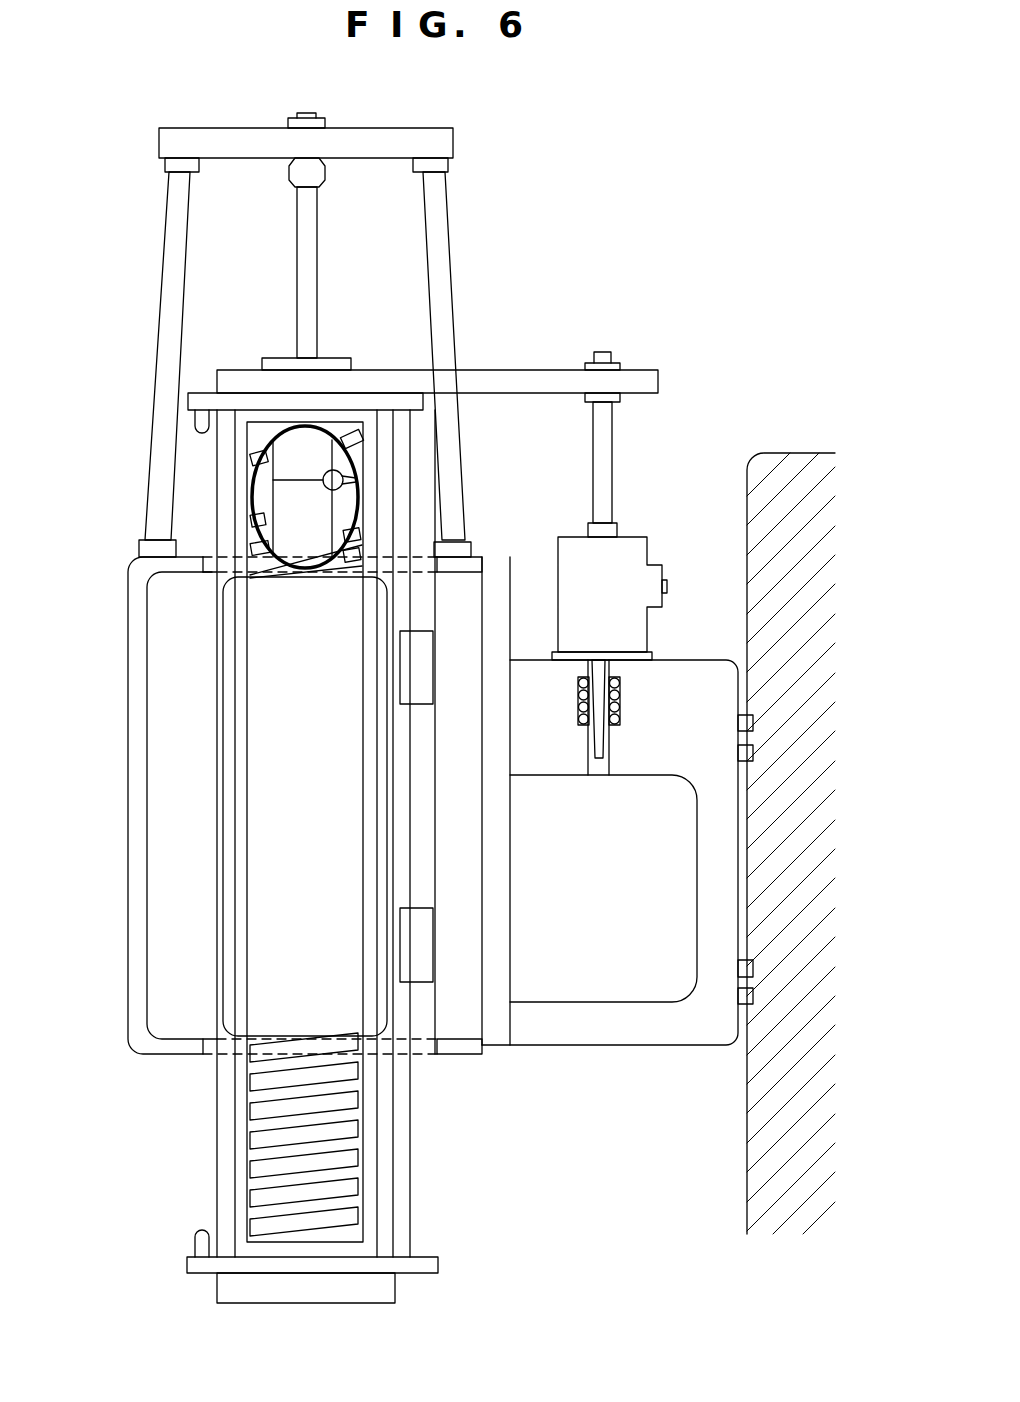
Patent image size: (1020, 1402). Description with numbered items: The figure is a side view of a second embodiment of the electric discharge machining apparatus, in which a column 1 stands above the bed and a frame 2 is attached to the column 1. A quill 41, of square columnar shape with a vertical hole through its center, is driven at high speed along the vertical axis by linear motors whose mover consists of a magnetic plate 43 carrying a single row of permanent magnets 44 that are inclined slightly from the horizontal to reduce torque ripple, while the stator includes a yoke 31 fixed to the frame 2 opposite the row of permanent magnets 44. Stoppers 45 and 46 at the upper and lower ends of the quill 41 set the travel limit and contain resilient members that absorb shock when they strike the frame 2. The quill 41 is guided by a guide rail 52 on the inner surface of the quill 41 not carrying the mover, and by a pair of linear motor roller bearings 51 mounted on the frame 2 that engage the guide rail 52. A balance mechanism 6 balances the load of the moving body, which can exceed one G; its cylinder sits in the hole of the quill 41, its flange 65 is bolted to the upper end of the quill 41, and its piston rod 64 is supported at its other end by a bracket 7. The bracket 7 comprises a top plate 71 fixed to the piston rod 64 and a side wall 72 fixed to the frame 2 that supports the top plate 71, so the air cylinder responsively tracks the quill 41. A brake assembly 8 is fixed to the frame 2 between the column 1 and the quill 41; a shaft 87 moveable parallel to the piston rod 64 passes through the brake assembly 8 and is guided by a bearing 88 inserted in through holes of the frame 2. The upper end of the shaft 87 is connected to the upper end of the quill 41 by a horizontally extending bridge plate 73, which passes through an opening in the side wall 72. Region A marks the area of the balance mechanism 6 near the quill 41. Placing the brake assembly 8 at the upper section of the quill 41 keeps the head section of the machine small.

The column 1 is at (783, 453).
The frame 2 is at (128, 653).
The balance mechanism 6 is at (333, 457).
The bracket 7 is at (485, 220).
The brake assembly 8 is at (643, 538).
The yoke 31 is at (232, 857).
The quill 41 is at (212, 1085).
The magnetic plate 43 is at (355, 1228).
The permanent magnets 44 is at (353, 1202).
The stopper 45 is at (195, 426).
The stopper 46 is at (193, 1243).
The linear motor roller bearings 51 is at (425, 685).
The guide rail 52 is at (405, 1097).
The piston rod 64 is at (316, 255).
The flange 65 is at (268, 358).
The top plate 71 is at (455, 143).
The side wall 72 is at (168, 259).
The bridge plate 73 is at (645, 374).
The shaft 87 is at (612, 470).
The bearing 88 is at (620, 708).
The point A is at (357, 505).